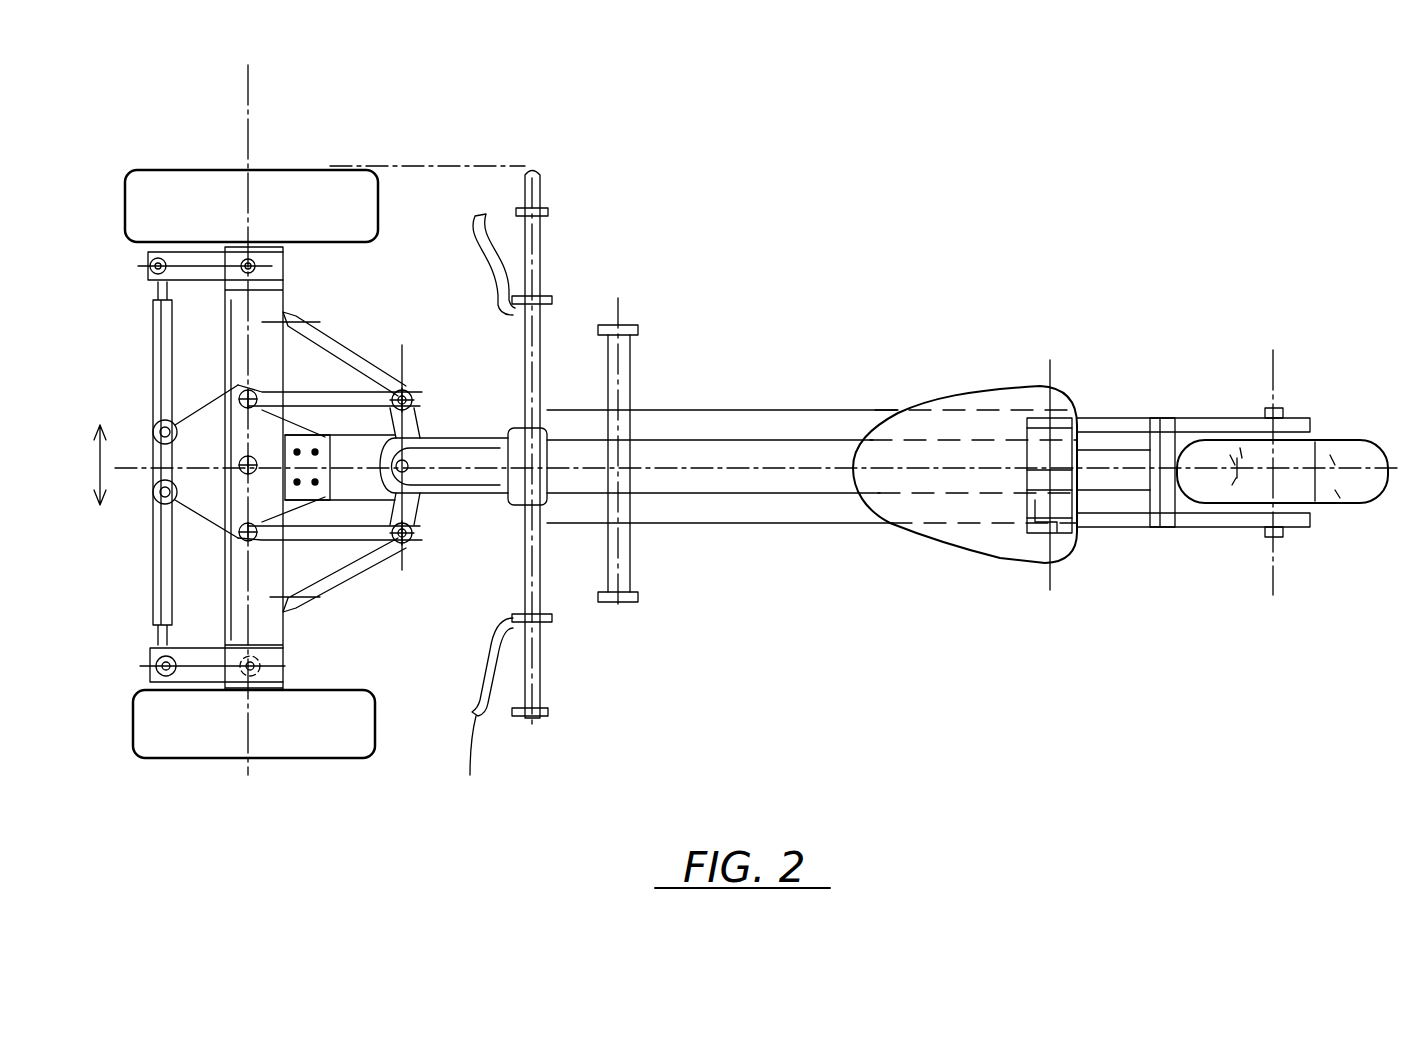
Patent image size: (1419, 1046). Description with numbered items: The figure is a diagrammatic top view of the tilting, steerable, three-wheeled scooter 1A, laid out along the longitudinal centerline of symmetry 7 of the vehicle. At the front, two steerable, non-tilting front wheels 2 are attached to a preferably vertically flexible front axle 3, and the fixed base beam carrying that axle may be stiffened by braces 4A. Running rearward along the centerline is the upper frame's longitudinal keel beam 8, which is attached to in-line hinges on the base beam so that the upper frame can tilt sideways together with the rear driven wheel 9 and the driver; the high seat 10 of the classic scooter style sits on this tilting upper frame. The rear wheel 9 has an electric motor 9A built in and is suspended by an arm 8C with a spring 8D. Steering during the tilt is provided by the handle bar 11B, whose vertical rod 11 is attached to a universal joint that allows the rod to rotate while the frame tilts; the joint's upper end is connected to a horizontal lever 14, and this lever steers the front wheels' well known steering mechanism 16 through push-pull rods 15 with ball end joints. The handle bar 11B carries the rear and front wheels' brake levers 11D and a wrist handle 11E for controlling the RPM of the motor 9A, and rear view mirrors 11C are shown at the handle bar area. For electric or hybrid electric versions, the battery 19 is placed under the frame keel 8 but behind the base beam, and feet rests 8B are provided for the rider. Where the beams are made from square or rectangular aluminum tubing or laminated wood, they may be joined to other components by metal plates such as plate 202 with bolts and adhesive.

The scooter 1A is at (795, 770).
The front steerable wheels 2 is at (332, 170).
The front axle 3 is at (288, 296).
The braces 4A is at (382, 320).
The longitudinal centerline of symmetry 7 is at (748, 470).
The keel beam 8 is at (707, 443).
The feet rests 8B is at (630, 325).
The arm 8C is at (1198, 527).
The spring 8D is at (1110, 415).
The rear driven wheel 9 is at (1330, 440).
The electric motor 9A is at (1295, 490).
The high seat 10 is at (987, 390).
The vertical rod 11 is at (458, 437).
The handle bar 11B is at (550, 199).
The rear view mirrors 11C is at (539, 165).
The brake levers 11D is at (475, 216).
The wrist handle 11E is at (542, 252).
The horizontal lever 14 is at (412, 512).
The push-pull rods 15 is at (316, 382).
The steering mechanism 16 is at (200, 407).
The battery 19 is at (788, 410).
The metal plates 202 is at (463, 624).